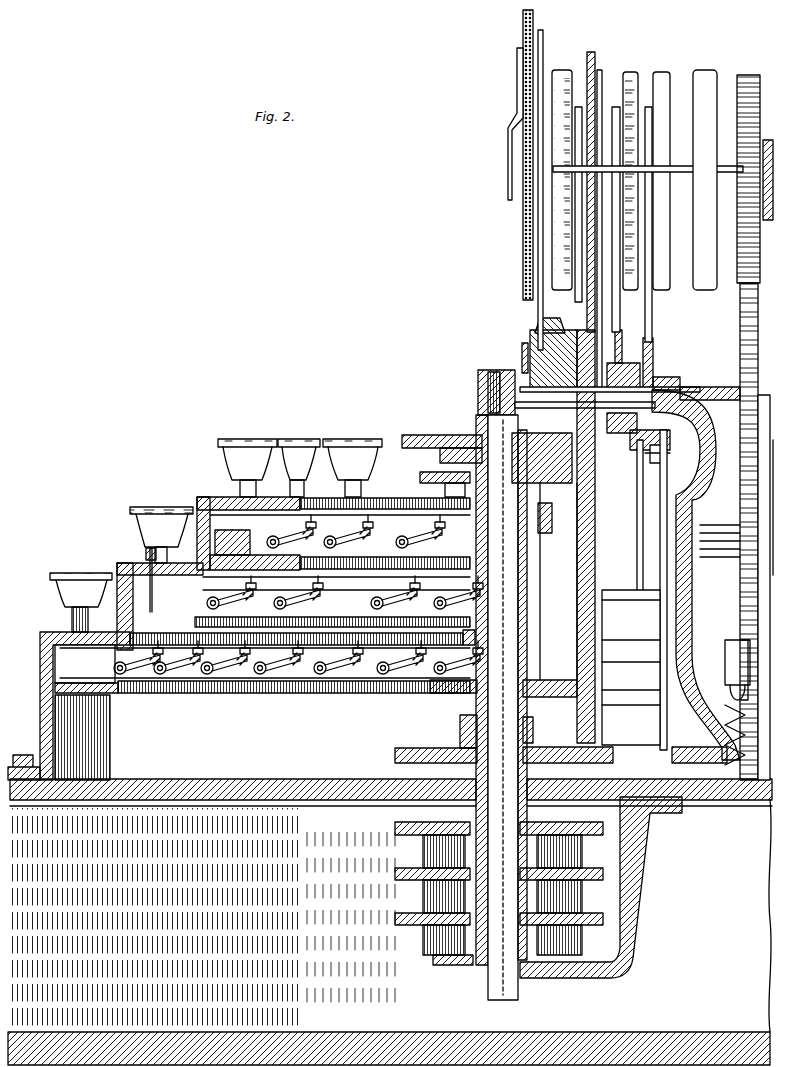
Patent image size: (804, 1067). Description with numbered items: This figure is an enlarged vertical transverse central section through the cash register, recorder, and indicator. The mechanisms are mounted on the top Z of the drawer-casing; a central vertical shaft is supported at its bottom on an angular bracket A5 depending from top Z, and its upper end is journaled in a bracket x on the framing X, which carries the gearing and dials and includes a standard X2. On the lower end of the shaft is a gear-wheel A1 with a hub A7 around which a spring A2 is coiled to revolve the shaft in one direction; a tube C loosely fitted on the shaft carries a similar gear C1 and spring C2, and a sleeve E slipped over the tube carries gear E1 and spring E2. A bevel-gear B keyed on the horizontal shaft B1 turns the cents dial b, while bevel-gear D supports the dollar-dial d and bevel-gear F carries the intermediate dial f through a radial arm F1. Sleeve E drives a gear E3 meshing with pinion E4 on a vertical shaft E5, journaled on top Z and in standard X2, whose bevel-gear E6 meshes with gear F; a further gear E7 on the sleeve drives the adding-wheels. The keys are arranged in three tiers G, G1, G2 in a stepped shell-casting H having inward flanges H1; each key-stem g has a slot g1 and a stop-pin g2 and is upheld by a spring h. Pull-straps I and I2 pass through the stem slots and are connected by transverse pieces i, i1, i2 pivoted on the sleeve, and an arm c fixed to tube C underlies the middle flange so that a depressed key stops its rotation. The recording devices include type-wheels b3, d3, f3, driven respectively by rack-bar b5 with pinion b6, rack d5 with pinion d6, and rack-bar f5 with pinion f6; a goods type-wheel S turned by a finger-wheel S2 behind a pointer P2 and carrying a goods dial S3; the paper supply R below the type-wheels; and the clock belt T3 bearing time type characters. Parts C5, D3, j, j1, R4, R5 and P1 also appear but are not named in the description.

The shell-casting H is at (40, 723).
The bar I2 is at (55, 670).
The sleeve E is at (447, 693).
The transverse piece i2 is at (267, 654).
The spring h is at (290, 678).
The key-stem g is at (318, 680).
The flange H1 is at (112, 693).
The stop-pin g2 is at (330, 585).
The transverse piece i1 is at (448, 602).
The casing C5 is at (412, 497).
The block I is at (231, 542).
The radial arm c is at (356, 531).
The pin j1 is at (374, 522).
The tube C is at (453, 520).
The transverse piece i is at (452, 542).
The first tier of keys G is at (265, 432).
The slot g1 is at (240, 500).
The second tier of keys G1 is at (160, 507).
The third tier of keys G2 is at (85, 573).
The block R4 is at (445, 436).
The block R is at (476, 440).
The bracket x is at (478, 397).
The gear C1 is at (476, 815).
The bevel-gear D is at (553, 345).
The block D3 is at (540, 322).
The annular dial d is at (592, 52).
The circular dial b is at (601, 230).
The type-wheel d3 is at (600, 70).
The pinion f6 is at (623, 359).
The rack-bar f5 is at (630, 313).
The pinion d6 is at (585, 370).
The pinion b6 is at (655, 370).
The toothed rack-bar b5 is at (650, 318).
The bevel-gear B is at (520, 350).
The horizontal shaft B1 is at (665, 380).
The block R5 is at (712, 392).
The bevel-gear F is at (638, 439).
The radial arm F1 is at (605, 553).
The gear E1 is at (395, 825).
The vertical shaft E5 is at (658, 652).
The pin j is at (559, 581).
The pinion E4 is at (688, 747).
The gear E7 is at (441, 723).
The gear E3 is at (428, 748).
The bevel-gear E6 is at (720, 500).
The standard X2 is at (725, 646).
The framing X is at (523, 235).
The dial S3 is at (543, 45).
The finger-wheel S2 is at (538, 232).
The pointer P2 is at (508, 143).
The type-wheel S is at (562, 172).
The rack d5 is at (575, 260).
The annular dial f is at (612, 150).
The type-wheel f3 is at (631, 72).
The type-wheel b3 is at (664, 72).
The scale P1 is at (703, 70).
The endless belt T3 is at (735, 553).
The spring E2 is at (423, 850).
The spring C2 is at (423, 895).
The gear-wheel A1 is at (395, 917).
The spring A2 is at (423, 942).
The hub A7 is at (470, 965).
The angular bracket A5 is at (645, 905).
The top of the drawer-casing Z is at (308, 779).